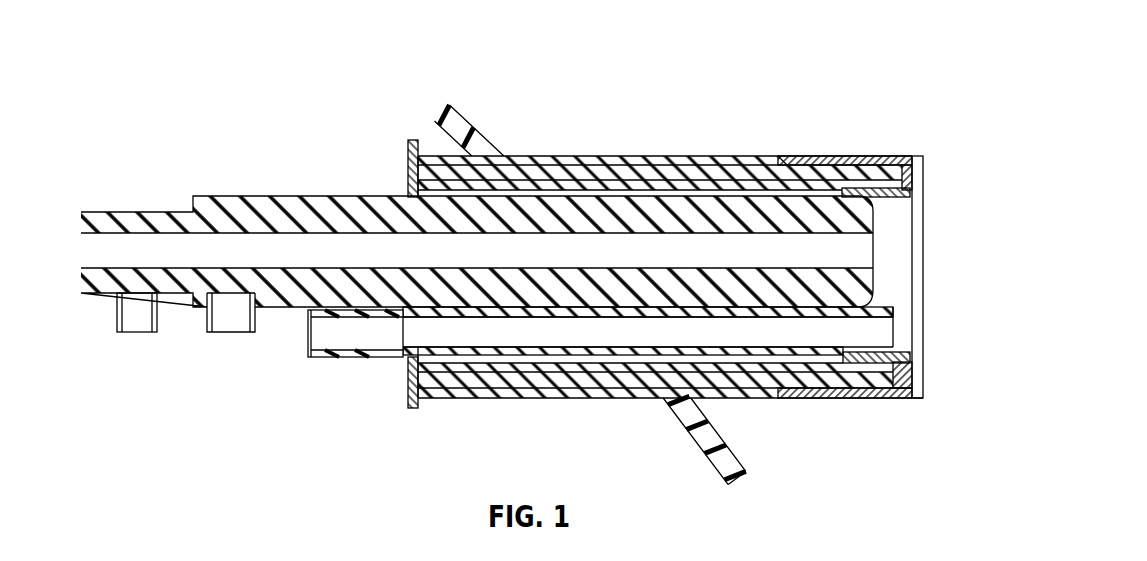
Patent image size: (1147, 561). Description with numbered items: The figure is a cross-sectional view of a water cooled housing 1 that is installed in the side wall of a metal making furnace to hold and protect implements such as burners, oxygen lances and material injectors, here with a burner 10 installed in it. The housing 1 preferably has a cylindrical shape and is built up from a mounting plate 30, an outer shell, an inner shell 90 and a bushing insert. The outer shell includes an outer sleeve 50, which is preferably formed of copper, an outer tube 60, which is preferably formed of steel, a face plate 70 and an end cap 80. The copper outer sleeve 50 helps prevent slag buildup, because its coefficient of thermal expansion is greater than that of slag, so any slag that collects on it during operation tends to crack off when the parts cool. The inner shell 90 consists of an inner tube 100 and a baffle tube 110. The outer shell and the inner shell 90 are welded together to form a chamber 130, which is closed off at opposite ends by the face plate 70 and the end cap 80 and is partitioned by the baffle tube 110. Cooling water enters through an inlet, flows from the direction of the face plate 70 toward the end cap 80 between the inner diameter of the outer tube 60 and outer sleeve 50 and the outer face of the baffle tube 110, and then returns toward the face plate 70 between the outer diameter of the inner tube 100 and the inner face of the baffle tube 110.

The water cooled housing 1 is at (788, 117).
The burner 10 is at (282, 191).
The mounting plate 30 is at (699, 448).
The outer sleeve 50 is at (847, 151).
The outer tube 60 is at (737, 157).
The face plate 70 is at (408, 135).
The end cap 80 is at (910, 151).
The inner shell 90 is at (405, 167).
The inner tube 100 is at (637, 180).
The baffle tube 110 is at (673, 170).
The chamber 130 is at (553, 157).